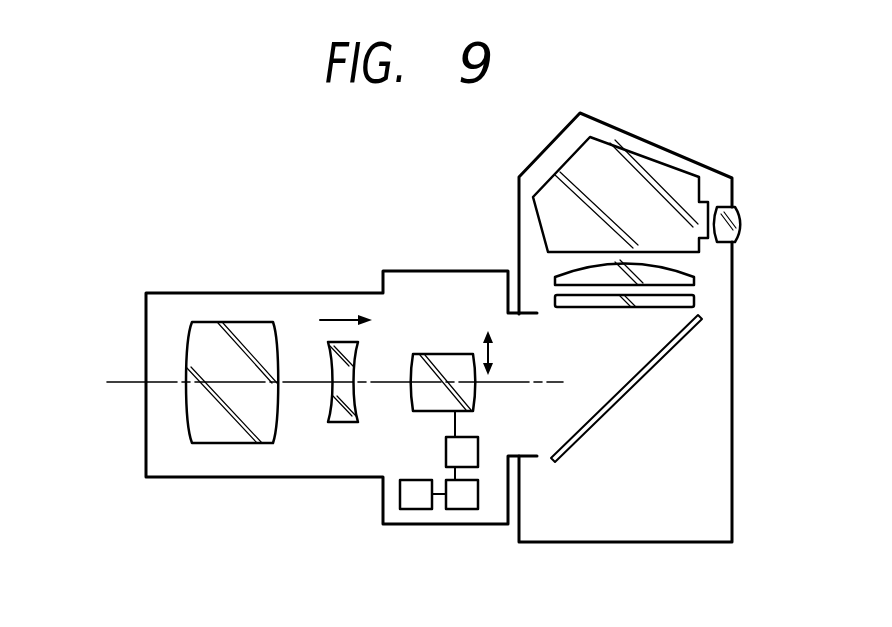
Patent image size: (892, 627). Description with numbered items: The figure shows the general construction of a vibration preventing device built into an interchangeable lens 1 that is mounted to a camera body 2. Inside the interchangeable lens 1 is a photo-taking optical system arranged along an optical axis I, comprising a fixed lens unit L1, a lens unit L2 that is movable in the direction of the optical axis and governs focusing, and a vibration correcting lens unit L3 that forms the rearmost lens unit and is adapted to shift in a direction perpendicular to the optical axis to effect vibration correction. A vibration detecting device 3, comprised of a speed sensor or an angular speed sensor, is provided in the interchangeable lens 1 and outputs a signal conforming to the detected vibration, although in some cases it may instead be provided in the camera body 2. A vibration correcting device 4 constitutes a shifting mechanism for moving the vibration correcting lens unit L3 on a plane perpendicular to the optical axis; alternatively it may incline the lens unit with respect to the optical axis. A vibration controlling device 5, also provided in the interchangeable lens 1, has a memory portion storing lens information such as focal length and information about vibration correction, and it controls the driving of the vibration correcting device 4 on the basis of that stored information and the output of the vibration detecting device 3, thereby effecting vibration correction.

The interchangeable lens 1 is at (212, 180).
The camera body 2 is at (644, 114).
The vibration detecting device 3 is at (410, 510).
The vibration correcting device 4 is at (478, 453).
The vibration controlling device 5 is at (450, 510).
The fixed lens unit L1 is at (206, 330).
The lens unit L2 is at (326, 355).
The vibration correcting lens unit L3 is at (441, 355).
The optical axis I is at (120, 382).